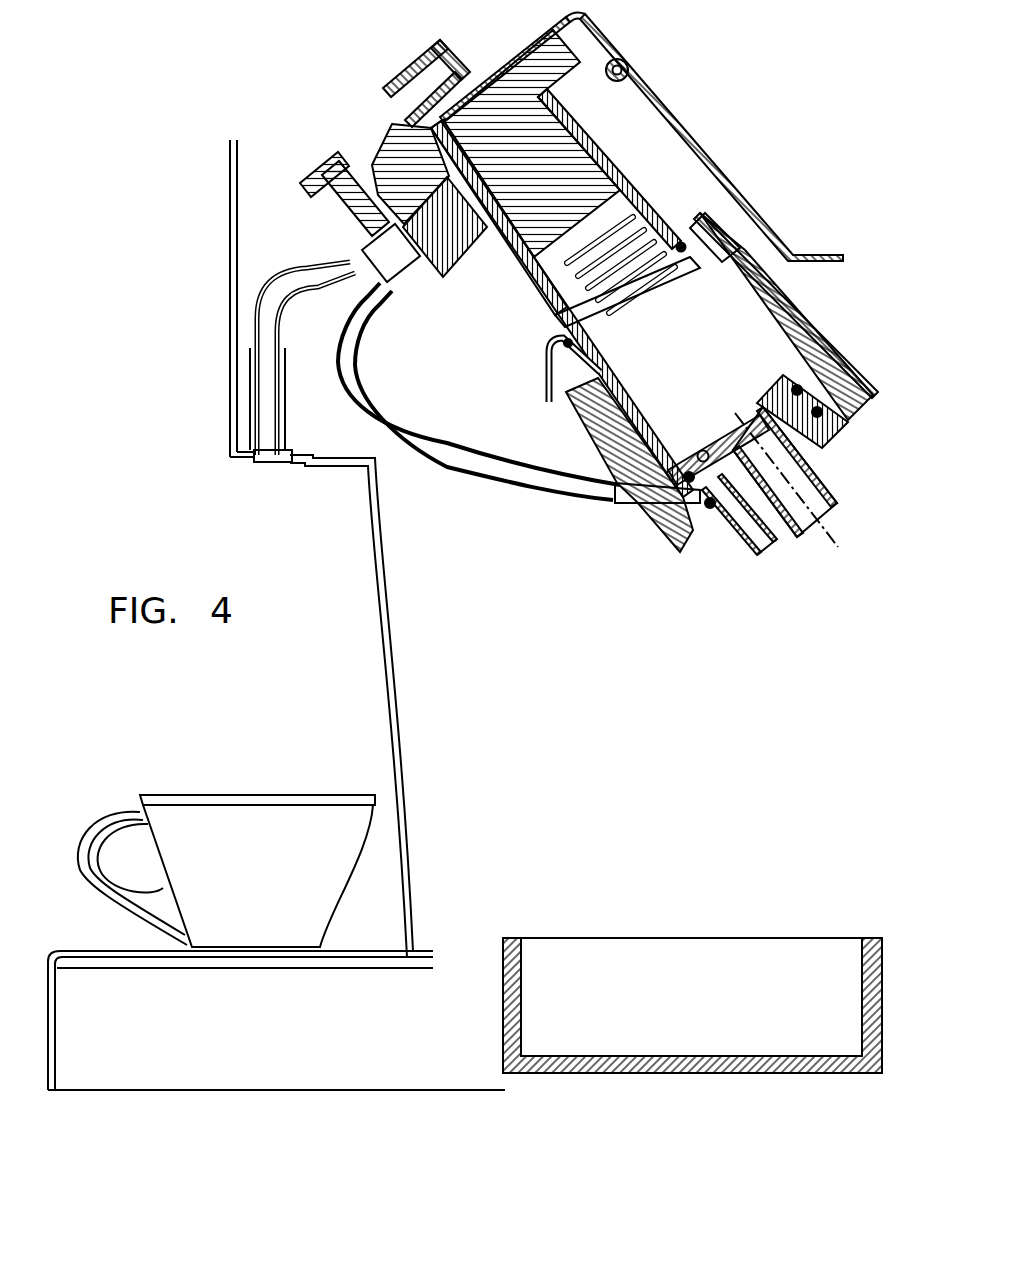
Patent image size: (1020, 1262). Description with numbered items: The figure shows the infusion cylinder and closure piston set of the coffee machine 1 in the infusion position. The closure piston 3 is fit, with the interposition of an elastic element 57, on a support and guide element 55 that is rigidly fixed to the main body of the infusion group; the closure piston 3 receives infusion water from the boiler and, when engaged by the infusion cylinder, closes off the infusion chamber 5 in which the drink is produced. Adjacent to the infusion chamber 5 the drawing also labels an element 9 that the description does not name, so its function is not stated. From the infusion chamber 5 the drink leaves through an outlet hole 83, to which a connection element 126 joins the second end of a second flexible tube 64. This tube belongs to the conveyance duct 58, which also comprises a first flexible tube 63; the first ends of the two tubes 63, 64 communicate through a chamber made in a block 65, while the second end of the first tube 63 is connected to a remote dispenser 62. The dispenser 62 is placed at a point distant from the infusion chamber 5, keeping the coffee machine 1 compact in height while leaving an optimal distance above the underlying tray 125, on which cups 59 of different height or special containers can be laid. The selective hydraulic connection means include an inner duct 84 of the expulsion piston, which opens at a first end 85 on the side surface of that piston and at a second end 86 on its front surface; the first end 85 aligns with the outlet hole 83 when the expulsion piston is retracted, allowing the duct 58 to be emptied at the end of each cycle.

The coffee machine 1 is at (317, 360).
The closure piston 3 is at (497, 267).
The infusion chamber 5 is at (690, 385).
The lower piston 9 is at (590, 450).
The support and guide element 55 is at (535, 140).
The elastic element 57 is at (633, 240).
The duct 58 is at (293, 399).
The cups 59 is at (157, 790).
The dispenser 62 is at (262, 458).
The first flexible tube 63 is at (278, 292).
The second flexible tube 64 is at (477, 477).
The block 65 is at (407, 285).
The outlet hole 83 is at (688, 508).
The inner duct 84 is at (717, 440).
The first end 85 is at (705, 512).
The second end 86 is at (700, 449).
The tray 125 is at (128, 950).
The connection element 126 is at (636, 505).